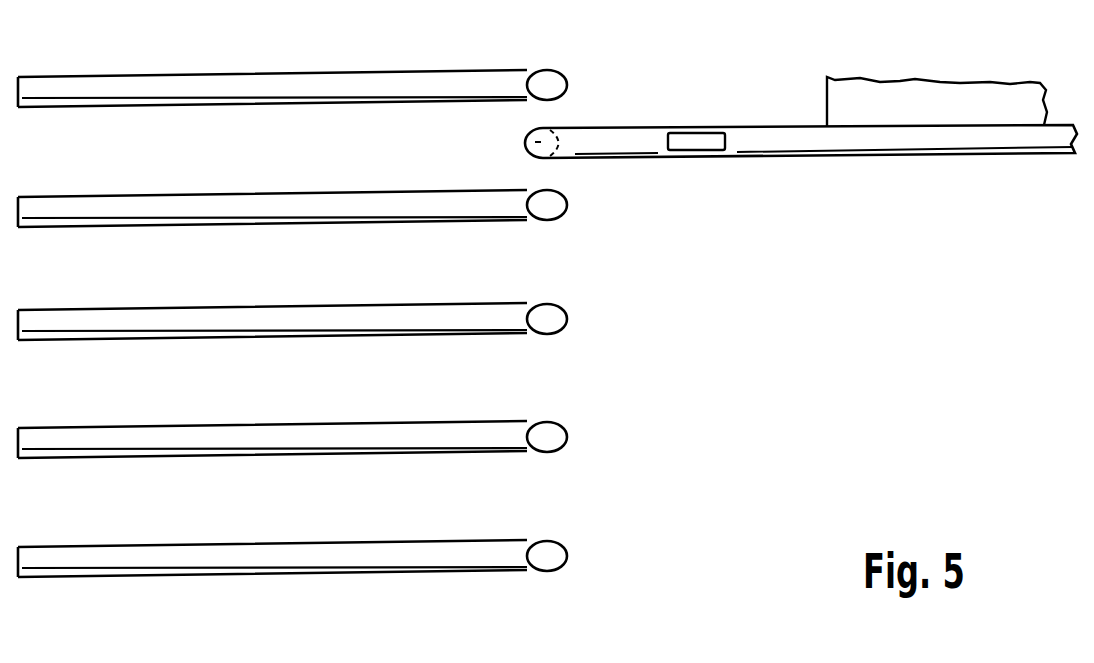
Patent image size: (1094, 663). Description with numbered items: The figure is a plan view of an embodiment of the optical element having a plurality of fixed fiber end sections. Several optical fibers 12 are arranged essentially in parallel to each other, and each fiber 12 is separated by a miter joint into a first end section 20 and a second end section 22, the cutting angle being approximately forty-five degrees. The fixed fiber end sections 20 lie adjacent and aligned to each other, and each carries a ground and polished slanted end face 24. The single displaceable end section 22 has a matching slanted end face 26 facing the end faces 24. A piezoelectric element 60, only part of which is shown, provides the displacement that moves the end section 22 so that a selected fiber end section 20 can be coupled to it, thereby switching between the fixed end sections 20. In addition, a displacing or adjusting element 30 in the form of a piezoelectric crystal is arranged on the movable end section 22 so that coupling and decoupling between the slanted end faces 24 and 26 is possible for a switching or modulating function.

The optical fiber 12 is at (106, 87).
The first end section 20 is at (273, 93).
The second end section 22 is at (783, 142).
The slanted end face 24 is at (548, 86).
The slanted end face 26 is at (525, 145).
The displacing or adjusting element 30 is at (694, 140).
The piezoelectric element 60 is at (952, 97).